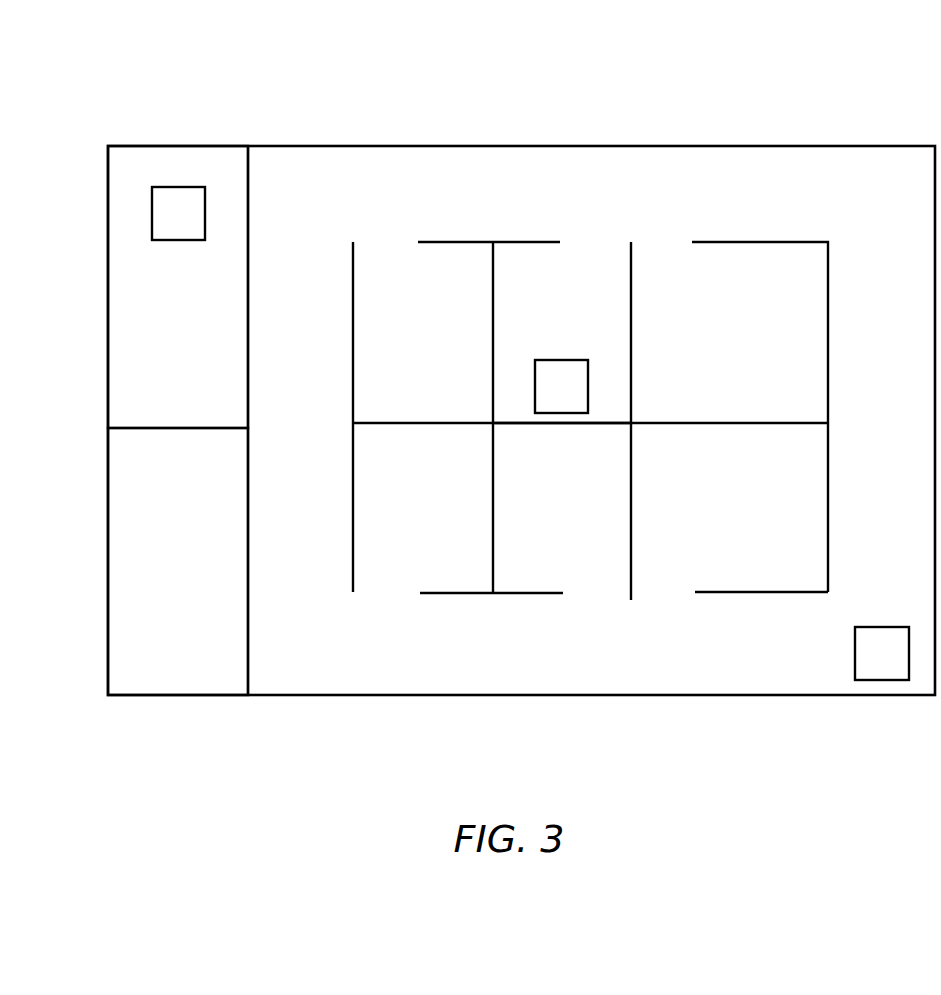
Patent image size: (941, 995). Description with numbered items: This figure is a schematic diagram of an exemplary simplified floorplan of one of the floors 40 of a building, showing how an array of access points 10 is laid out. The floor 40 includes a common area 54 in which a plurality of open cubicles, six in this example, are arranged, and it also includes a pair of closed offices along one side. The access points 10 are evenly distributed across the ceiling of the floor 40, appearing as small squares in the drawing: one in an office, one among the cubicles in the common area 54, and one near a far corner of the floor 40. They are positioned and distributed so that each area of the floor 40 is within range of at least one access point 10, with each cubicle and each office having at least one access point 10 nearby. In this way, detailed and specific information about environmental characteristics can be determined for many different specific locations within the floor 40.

The floor 40 is at (118, 86).
The access point 10 is at (178, 187).
The common area 54 is at (690, 155).